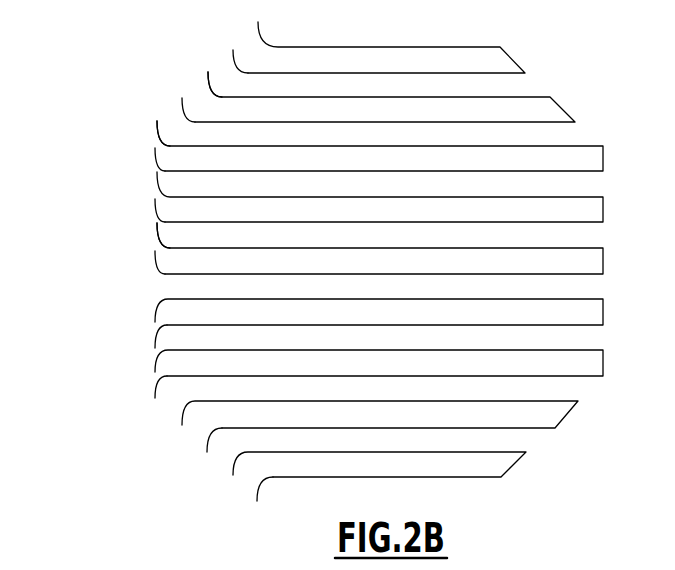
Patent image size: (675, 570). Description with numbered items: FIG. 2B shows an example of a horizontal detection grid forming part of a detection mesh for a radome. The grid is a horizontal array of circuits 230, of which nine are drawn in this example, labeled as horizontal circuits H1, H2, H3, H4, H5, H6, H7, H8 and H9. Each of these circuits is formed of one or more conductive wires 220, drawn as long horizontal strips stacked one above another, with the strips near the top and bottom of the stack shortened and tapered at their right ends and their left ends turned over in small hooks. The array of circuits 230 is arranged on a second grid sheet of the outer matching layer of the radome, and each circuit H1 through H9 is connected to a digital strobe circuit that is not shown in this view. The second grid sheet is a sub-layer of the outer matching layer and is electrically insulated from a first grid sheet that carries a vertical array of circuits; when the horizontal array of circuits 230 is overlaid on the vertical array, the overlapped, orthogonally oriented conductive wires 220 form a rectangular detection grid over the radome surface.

The conductive wire 220 is at (565, 110).
The horizontal array of circuits 230 is at (210, 72).
The horizontal circuit H1 is at (379, 47).
The horizontal circuit H2 is at (378, 97).
The horizontal circuit H3 is at (379, 146).
The horizontal circuit H4 is at (379, 197).
The horizontal circuit H5 is at (379, 249).
The horizontal circuit H6 is at (379, 323).
The horizontal circuit H7 is at (379, 374).
The horizontal circuit H8 is at (380, 426).
The horizontal circuit H9 is at (379, 476).